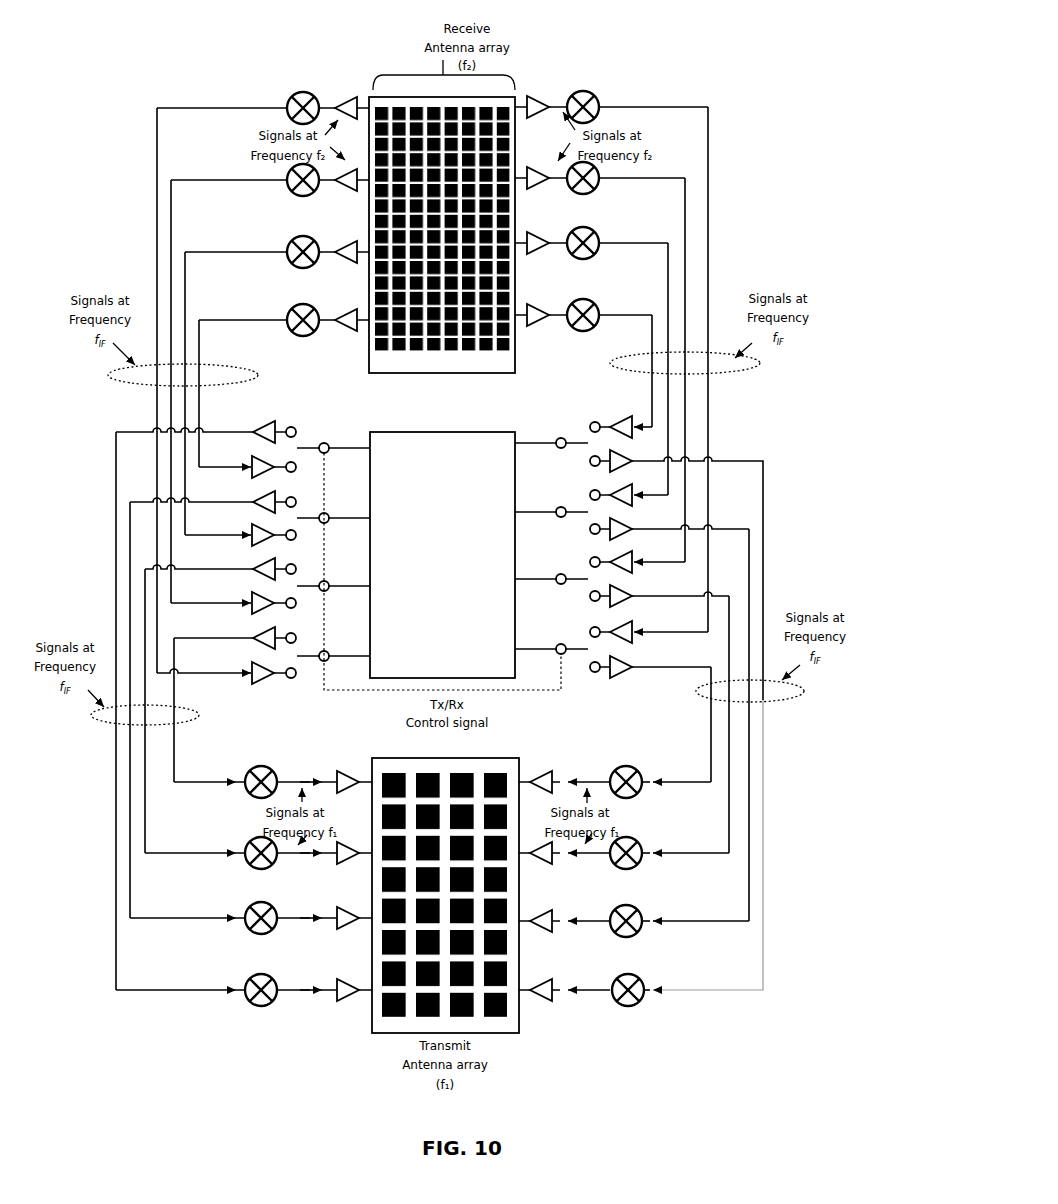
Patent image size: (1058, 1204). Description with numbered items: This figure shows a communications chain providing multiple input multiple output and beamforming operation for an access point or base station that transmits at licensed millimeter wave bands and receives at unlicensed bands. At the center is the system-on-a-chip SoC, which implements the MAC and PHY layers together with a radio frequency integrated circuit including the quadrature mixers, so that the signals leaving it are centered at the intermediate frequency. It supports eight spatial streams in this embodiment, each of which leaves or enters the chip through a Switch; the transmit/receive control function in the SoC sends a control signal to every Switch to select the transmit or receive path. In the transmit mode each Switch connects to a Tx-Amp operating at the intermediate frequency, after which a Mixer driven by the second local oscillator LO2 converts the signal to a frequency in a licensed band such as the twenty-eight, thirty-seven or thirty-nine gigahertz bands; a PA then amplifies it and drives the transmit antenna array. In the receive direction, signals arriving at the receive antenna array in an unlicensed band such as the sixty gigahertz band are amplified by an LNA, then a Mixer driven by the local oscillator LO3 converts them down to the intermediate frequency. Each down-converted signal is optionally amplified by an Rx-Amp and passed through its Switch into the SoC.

The system-on-a-chip SoC is at (442, 555).
The switch Switch is at (571, 431).
The mixer Mixer is at (628, 1036).
The local oscillator LO3 is at (583, 60).
The second local oscillator LO2 is at (261, 740).
The low-noise amplifier LNA is at (442, 205).
The transmit amplifier Tx-Amp is at (277, 527).
The receive amplifier Rx-Amp is at (620, 523).
The power amplifier PA is at (442, 725).